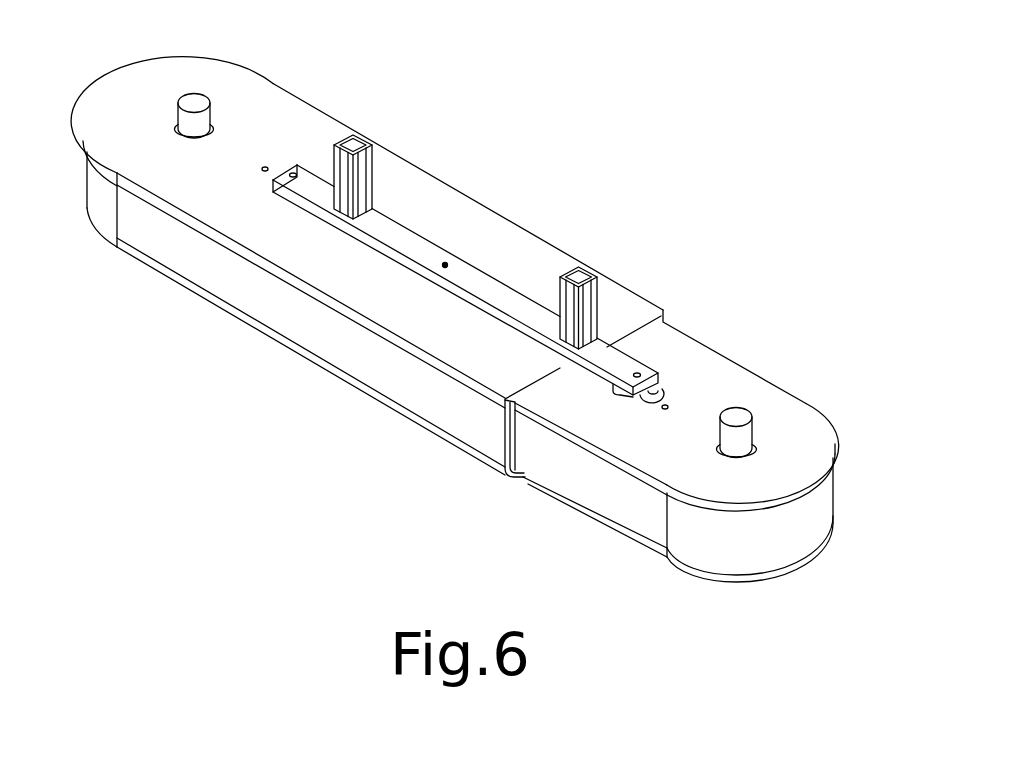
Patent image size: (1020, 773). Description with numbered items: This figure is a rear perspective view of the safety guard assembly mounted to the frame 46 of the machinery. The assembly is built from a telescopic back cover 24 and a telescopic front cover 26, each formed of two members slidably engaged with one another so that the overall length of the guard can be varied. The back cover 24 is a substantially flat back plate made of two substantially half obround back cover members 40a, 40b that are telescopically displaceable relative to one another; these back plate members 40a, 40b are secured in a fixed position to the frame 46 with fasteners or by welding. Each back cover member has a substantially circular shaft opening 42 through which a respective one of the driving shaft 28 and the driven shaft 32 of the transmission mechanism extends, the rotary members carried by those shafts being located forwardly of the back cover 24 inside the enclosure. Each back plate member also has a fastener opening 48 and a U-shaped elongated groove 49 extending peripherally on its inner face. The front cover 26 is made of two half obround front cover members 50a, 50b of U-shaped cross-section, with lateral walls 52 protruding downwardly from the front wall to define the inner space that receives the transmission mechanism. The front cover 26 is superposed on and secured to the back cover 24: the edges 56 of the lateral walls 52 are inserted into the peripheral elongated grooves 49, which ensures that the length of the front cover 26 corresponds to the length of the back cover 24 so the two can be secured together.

The telescopic back cover 24 is at (420, 165).
The telescopic front cover 26 is at (587, 517).
The driving shaft 28 is at (207, 100).
The driven shaft 32 is at (752, 413).
The back cover member 40a is at (490, 207).
The back cover member 40b is at (765, 382).
The shaft opening 42 is at (177, 138).
The frame 46 is at (447, 263).
The fastener opening 48 is at (267, 167).
The U-shaped elongated groove 49 is at (505, 410).
The front cover member 50a is at (297, 357).
The front cover member 50b is at (687, 570).
The lateral walls 52 is at (292, 318).
The edges 56 is at (507, 413).